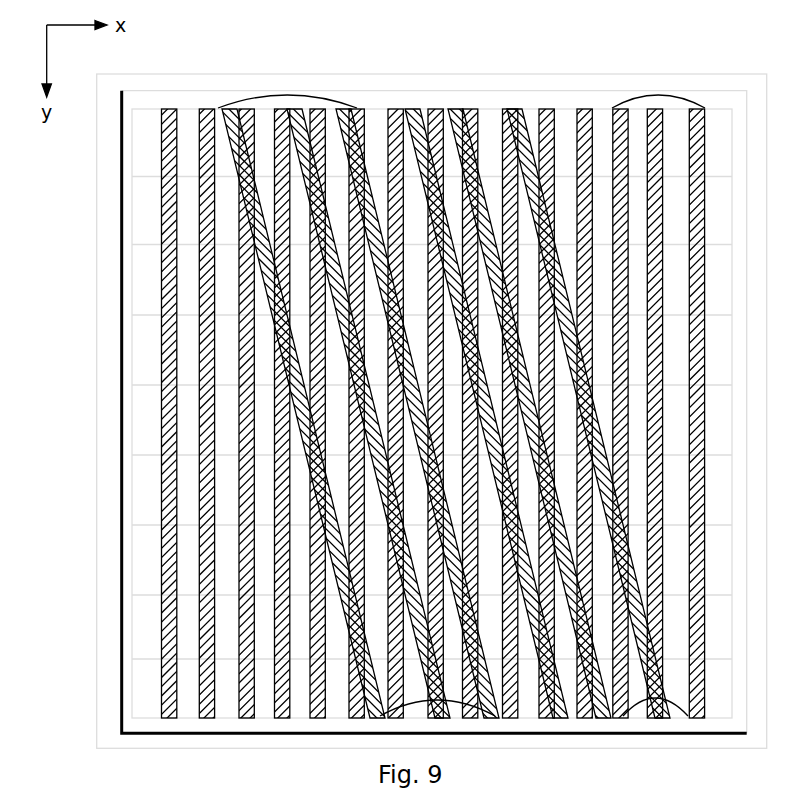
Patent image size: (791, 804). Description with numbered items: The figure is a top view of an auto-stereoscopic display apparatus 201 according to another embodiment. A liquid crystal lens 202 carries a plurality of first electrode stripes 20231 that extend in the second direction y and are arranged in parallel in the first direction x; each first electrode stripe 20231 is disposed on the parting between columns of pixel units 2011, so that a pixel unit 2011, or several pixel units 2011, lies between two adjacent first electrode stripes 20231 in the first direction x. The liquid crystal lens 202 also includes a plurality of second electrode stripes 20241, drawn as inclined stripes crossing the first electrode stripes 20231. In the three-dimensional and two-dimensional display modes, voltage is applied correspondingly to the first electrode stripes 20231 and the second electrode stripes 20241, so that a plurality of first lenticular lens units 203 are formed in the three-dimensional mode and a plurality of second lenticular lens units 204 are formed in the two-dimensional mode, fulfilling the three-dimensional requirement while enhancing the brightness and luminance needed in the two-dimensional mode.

The display substrate 201 is at (558, 74).
The liquid crystal lens 202 is at (168, 91).
The pixel unit 2011 is at (632, 142).
The first lenticular lens unit 203 is at (338, 103).
The second lenticular lens unit 204 is at (697, 100).
The first electrode stripe 20231 is at (440, 110).
The second electrode stripe 20241 is at (230, 108).